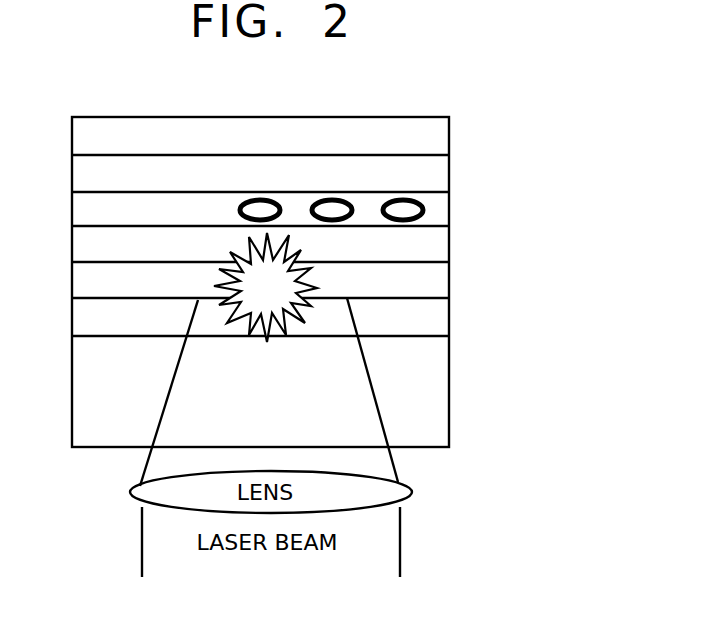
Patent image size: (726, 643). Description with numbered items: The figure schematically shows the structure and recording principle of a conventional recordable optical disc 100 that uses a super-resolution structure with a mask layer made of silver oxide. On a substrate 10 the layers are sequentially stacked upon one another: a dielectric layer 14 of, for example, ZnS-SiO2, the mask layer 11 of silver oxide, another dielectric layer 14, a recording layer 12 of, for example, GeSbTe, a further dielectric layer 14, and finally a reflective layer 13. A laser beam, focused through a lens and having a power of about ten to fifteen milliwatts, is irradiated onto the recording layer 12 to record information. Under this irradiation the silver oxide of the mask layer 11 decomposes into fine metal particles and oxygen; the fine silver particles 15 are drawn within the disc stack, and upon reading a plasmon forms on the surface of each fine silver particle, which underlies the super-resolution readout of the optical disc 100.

The recordable optical disc 100 is at (467, 95).
The substrate 10 is at (435, 394).
The mask layer 11 is at (435, 285).
The recording layer 12 is at (435, 225).
The reflective layer 13 is at (435, 135).
The dielectric layer 14 is at (435, 170).
The particles 15 is at (424, 214).